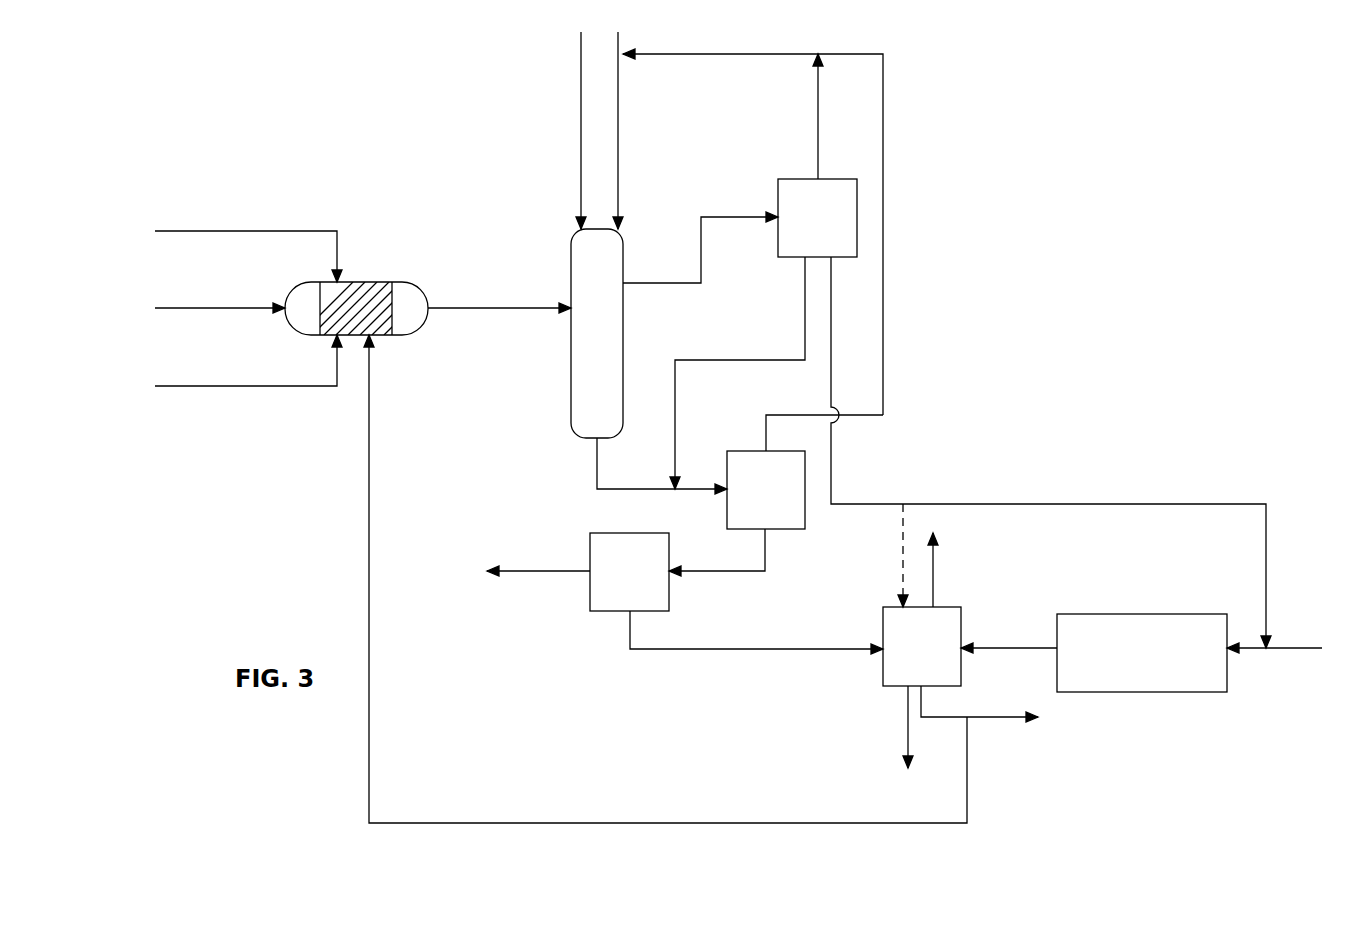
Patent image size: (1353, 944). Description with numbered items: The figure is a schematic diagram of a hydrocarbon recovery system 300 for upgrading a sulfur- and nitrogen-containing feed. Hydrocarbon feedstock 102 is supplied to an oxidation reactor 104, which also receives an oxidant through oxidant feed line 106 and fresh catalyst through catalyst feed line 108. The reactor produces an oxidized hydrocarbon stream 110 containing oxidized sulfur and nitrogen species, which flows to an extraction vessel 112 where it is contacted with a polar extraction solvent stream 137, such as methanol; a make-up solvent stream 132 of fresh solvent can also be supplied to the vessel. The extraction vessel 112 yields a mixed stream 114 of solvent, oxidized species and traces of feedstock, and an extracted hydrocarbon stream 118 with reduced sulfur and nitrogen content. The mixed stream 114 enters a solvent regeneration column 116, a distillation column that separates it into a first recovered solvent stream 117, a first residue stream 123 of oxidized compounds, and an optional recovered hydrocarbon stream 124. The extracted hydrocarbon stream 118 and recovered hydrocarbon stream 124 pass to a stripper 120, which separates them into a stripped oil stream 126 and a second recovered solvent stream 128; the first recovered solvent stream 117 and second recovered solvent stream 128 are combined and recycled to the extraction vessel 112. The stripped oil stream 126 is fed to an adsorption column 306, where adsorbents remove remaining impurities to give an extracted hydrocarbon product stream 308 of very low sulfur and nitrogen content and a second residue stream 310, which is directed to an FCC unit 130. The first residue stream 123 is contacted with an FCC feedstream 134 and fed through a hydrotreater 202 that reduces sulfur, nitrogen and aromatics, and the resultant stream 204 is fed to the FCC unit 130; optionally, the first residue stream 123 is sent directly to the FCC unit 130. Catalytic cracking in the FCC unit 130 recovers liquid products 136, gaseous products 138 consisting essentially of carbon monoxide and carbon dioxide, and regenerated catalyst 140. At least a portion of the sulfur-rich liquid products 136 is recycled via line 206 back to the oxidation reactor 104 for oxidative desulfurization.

The hydrocarbon recovery system 300 is at (308, 41).
The hydrocarbon feedstock 102 is at (181, 308).
The oxidation reactor 104 is at (373, 282).
The oxidant feed line 106 is at (181, 231).
The catalyst feed line 108 is at (181, 386).
The oxidized hydrocarbon stream 110 is at (466, 308).
The extraction vessel 112 is at (575, 233).
The mixed stream 114 is at (635, 283).
The solvent regeneration column 116 is at (798, 179).
The first recovered solvent stream 117 is at (818, 120).
The extracted hydrocarbon stream 118 is at (597, 458).
The stripper 120 is at (757, 450).
The first residue stream 123 is at (831, 486).
The recovered hydrocarbon stream 124 is at (700, 360).
The stripped oil stream 126 is at (723, 572).
The second recovered solvent stream 128 is at (883, 158).
The FCC unit 130 is at (883, 678).
The make-up solvent stream 132 is at (581, 144).
The FCC feedstream 134 is at (1250, 650).
The liquid products 136 is at (985, 717).
The extraction solvent stream 137 is at (618, 176).
The gaseous products 138 is at (934, 582).
The regenerated catalyst 140 is at (908, 745).
The hydrotreater 202 is at (1122, 614).
The resultant stream 204 is at (985, 648).
The recycle line 206 is at (369, 562).
The adsorption column 306 is at (590, 590).
The extracted hydrocarbon product stream 308 is at (527, 572).
The second residue stream 310 is at (668, 650).